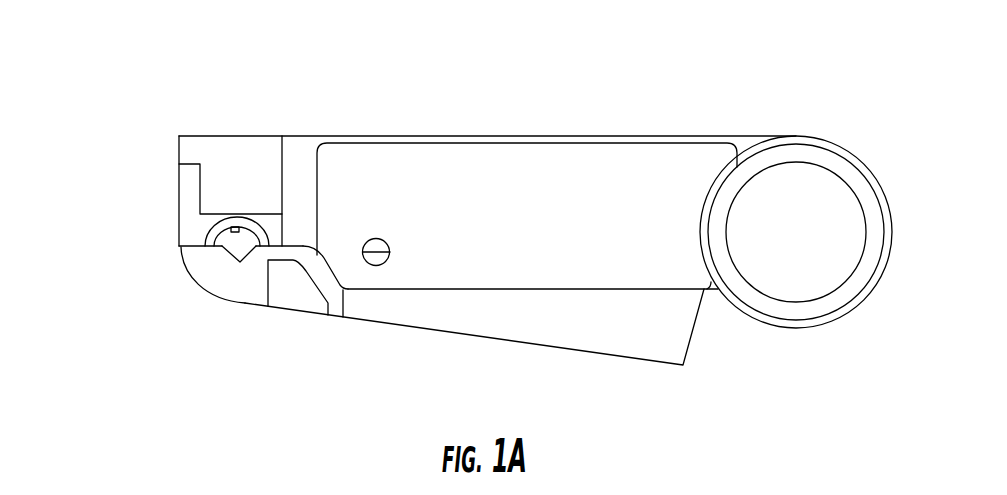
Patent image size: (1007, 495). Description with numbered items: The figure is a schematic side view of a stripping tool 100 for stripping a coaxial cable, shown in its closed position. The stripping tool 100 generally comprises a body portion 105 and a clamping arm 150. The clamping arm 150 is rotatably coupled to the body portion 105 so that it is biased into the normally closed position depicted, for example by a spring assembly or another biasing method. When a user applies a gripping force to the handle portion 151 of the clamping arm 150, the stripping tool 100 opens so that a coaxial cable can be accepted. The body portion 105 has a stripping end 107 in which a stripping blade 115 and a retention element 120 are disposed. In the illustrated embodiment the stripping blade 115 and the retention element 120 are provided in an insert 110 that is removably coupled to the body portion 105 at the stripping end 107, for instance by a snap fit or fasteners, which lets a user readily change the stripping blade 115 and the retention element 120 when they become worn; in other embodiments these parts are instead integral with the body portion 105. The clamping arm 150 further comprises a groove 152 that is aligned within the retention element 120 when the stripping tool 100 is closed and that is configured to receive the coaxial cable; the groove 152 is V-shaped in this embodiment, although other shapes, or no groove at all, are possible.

The stripping tool 100 is at (541, 46).
The body portion 105 is at (270, 157).
The stripping end 107 is at (207, 124).
The insert 110 is at (188, 183).
The stripping blade 115 is at (226, 250).
The retention element 120 is at (208, 241).
The clamping arm 150 is at (373, 322).
The handle portion 151 is at (497, 340).
The groove 152 is at (243, 262).